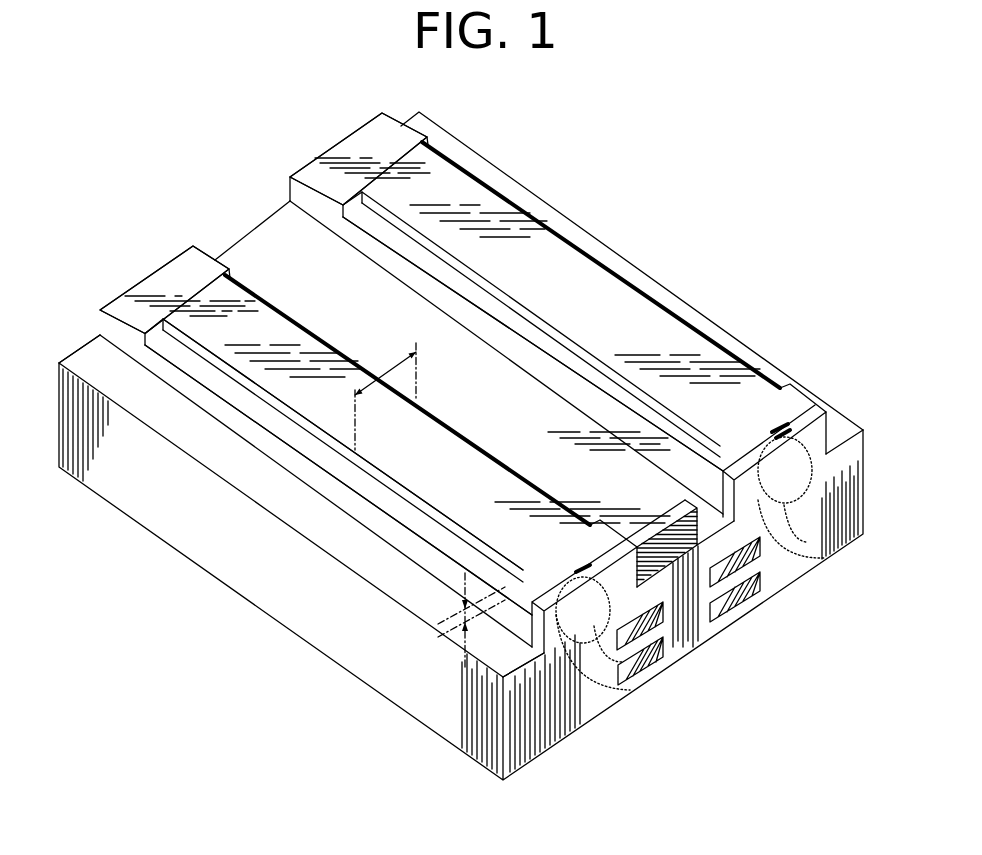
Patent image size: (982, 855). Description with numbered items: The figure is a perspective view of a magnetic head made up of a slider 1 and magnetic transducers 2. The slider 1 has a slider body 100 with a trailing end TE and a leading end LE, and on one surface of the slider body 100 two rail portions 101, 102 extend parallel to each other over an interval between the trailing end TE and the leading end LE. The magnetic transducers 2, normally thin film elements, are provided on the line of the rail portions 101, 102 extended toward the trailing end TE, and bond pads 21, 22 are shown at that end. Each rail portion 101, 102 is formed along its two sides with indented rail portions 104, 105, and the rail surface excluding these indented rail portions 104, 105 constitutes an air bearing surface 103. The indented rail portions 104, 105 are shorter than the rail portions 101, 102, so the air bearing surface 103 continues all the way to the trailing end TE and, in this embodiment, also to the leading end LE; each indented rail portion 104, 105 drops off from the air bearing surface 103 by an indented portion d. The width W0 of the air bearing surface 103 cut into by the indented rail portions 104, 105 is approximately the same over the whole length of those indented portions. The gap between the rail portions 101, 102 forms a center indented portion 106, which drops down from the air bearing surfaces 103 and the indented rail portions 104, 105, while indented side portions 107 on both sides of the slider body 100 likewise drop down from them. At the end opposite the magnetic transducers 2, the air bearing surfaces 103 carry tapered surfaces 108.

The slider 1 is at (203, 590).
The magnetic transducer 2 is at (798, 461).
The bond pad 21 is at (619, 651).
The bond pad 22 is at (665, 650).
The slider body 100 is at (365, 598).
The rail portion 101 is at (112, 320).
The rail portion 102 is at (265, 215).
The air bearing surface 103 is at (280, 340).
The indented rail portion 104 is at (435, 520).
The indented rail portion 105 is at (433, 388).
The center indented portion 106 is at (247, 258).
The indented side portion 107 is at (110, 370).
The tapered surface 108 is at (176, 293).
The leading end LE is at (252, 272).
The trailing end TE is at (752, 528).
The width of the air bearing surfaces W0 is at (385, 382).
The indented portion d is at (462, 620).